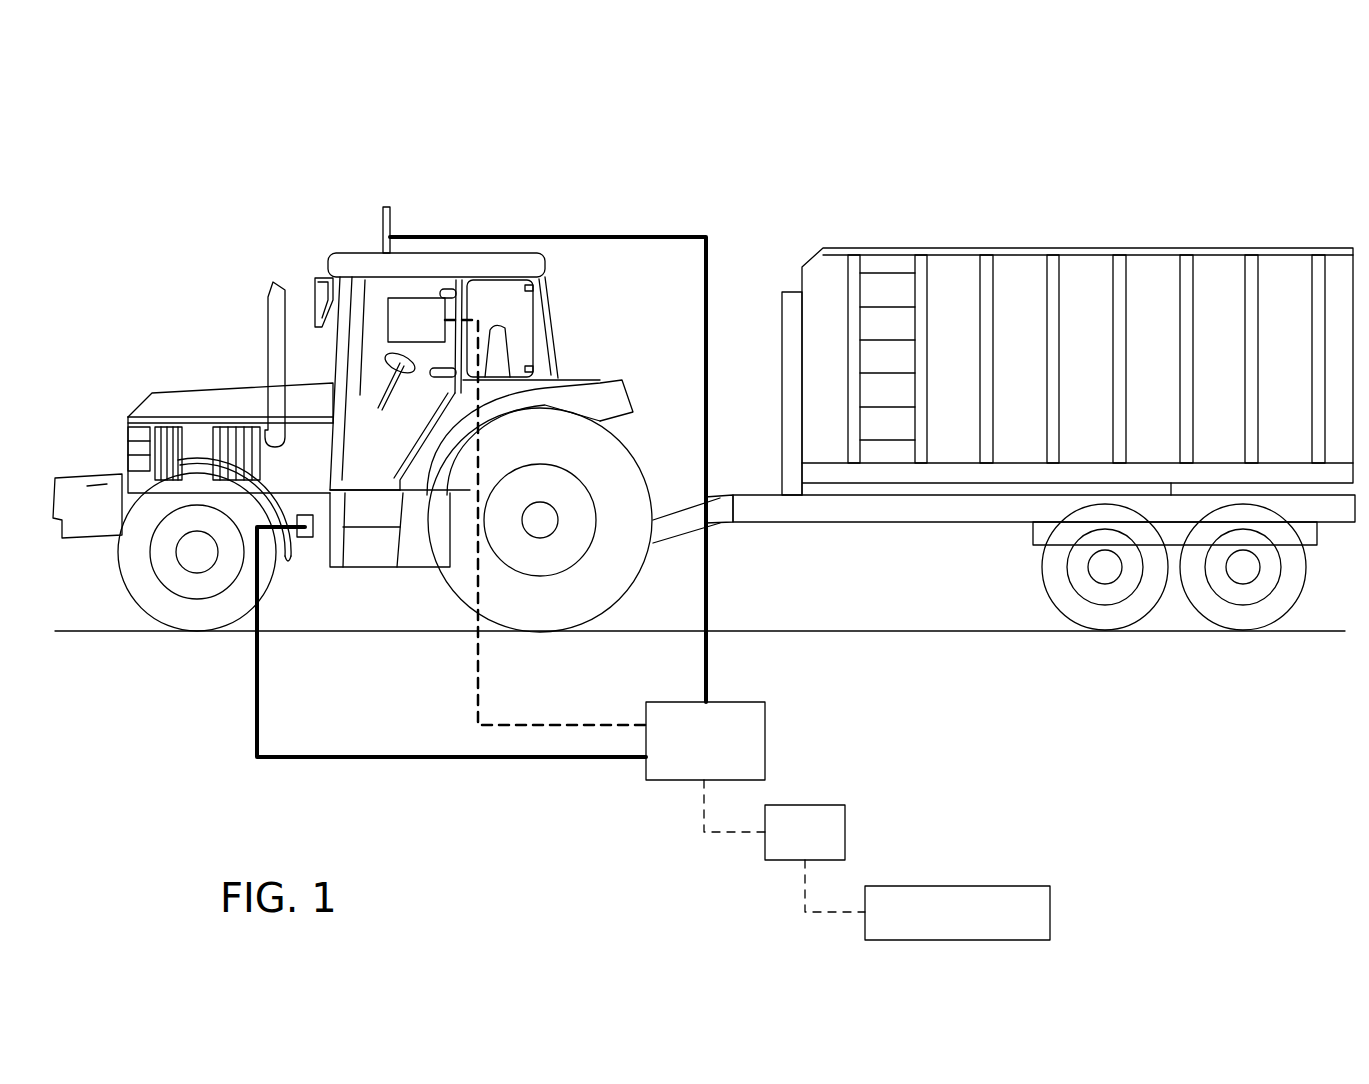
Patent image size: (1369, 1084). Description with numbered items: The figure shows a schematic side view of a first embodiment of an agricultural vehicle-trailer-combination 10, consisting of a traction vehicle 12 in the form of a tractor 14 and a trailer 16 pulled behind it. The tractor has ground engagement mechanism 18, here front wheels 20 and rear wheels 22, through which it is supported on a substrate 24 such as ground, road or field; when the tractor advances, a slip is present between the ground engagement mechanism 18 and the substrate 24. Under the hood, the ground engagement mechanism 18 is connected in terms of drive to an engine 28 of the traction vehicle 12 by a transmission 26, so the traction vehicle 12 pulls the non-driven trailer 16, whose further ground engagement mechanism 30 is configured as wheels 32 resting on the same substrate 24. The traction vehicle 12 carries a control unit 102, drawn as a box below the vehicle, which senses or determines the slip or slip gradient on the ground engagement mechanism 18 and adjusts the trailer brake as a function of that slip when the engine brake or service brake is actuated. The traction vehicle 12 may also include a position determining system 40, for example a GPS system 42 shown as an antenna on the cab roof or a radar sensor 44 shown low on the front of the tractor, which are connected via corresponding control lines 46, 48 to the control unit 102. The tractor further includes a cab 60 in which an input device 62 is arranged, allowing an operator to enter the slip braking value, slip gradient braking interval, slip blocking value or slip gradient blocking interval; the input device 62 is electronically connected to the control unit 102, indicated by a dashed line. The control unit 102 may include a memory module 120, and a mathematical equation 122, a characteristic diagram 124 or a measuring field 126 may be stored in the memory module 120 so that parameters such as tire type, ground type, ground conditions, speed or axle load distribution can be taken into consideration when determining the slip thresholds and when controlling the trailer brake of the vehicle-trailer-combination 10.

The agricultural vehicle-trailer-combination 10 is at (519, 108).
The traction vehicle 12 is at (413, 452).
The tractor 14 is at (199, 275).
The trailer 16 is at (1030, 448).
The ground engagement mechanism 18 is at (381, 547).
The front wheels 20 is at (162, 607).
The rear wheels 22 is at (543, 596).
The substrate 24 is at (1069, 648).
The transmission 26 is at (193, 410).
The engine 28 is at (160, 440).
The further ground engagement mechanism 30 is at (1174, 606).
The wheels 32 is at (1213, 608).
The position determining system 40 is at (333, 383).
The GPS system 42 is at (383, 216).
The radar sensor 44 is at (308, 545).
The control line 46 is at (257, 733).
The control line 48 is at (708, 585).
The cab 60 is at (500, 268).
The input device 62 is at (517, 511).
The control unit 102 is at (765, 755).
The memory module 120 is at (774, 820).
The mathematical equation 122 is at (927, 900).
The characteristic diagram 124 is at (927, 900).
The measuring field 126 is at (927, 900).